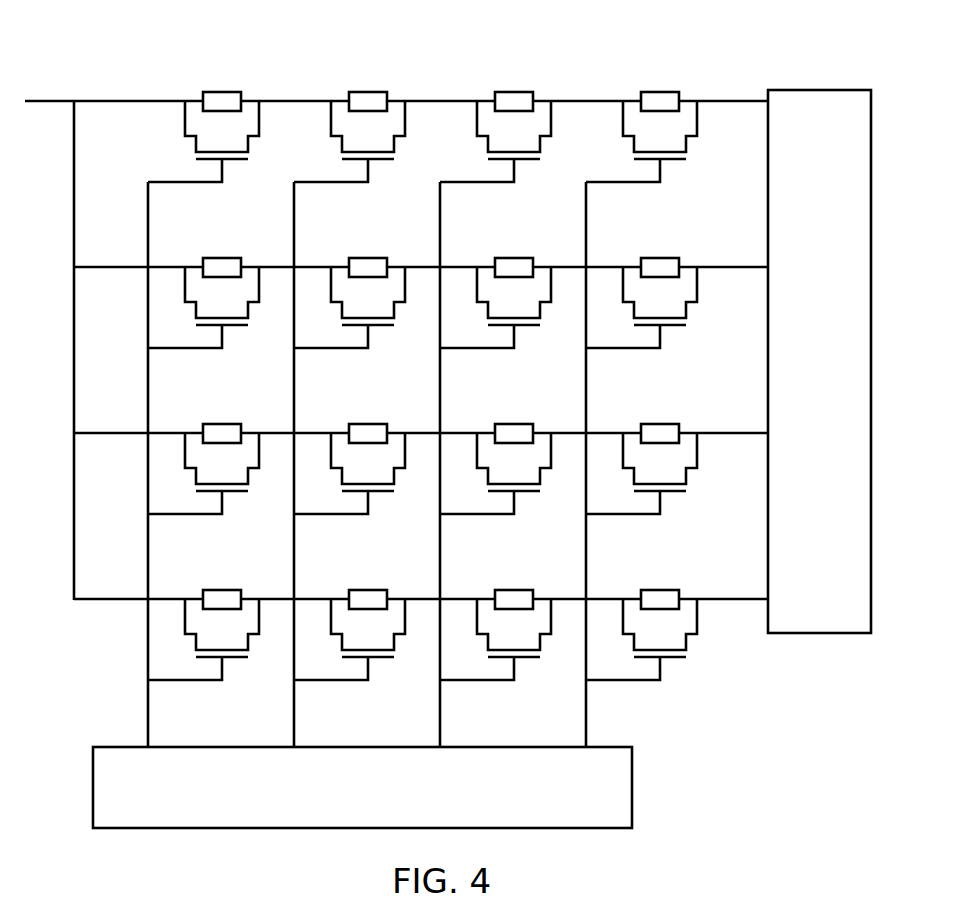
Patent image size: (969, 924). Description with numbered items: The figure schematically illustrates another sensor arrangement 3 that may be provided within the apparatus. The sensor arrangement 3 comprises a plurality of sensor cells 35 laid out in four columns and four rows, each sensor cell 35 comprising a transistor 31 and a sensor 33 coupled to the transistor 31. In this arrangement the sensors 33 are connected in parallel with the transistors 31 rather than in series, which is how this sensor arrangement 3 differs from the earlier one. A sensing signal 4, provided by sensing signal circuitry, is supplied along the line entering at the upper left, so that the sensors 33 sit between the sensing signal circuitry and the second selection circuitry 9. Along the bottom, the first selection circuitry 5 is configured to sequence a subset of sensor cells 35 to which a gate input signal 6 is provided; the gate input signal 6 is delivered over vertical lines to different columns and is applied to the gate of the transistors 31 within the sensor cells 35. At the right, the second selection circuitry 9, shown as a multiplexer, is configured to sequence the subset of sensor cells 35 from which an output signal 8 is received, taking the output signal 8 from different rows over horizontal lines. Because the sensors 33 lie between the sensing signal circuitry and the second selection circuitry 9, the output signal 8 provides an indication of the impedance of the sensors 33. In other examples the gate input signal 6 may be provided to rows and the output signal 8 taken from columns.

The sensor arrangement 3 is at (657, 78).
The sensing signal 4 is at (49, 335).
The first selection circuitry 5 is at (632, 792).
The gate input signal 6 is at (378, 464).
The output signal 8 is at (396, 335).
The second selection circuitry 9 is at (824, 90).
The transistor 31 is at (258, 120).
The sensor 33 is at (240, 92).
The sensor cell 35 is at (227, 98).